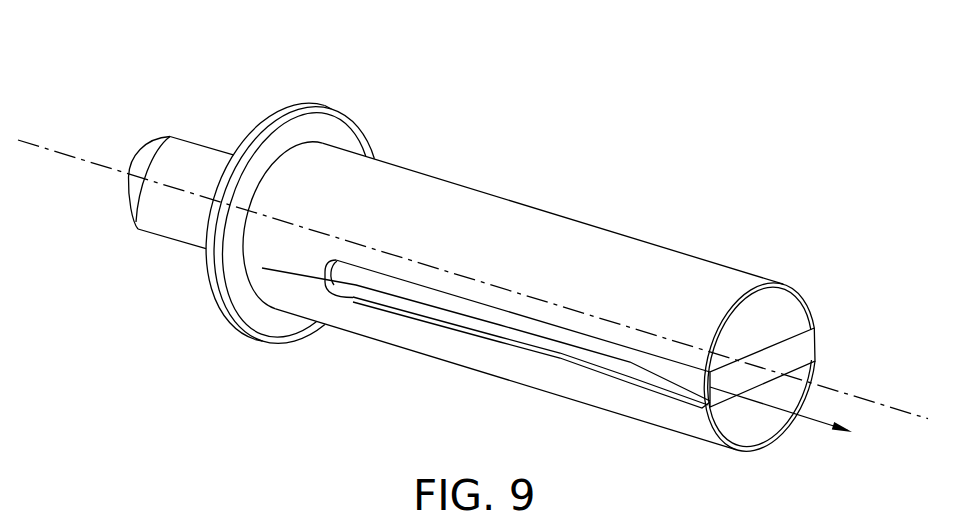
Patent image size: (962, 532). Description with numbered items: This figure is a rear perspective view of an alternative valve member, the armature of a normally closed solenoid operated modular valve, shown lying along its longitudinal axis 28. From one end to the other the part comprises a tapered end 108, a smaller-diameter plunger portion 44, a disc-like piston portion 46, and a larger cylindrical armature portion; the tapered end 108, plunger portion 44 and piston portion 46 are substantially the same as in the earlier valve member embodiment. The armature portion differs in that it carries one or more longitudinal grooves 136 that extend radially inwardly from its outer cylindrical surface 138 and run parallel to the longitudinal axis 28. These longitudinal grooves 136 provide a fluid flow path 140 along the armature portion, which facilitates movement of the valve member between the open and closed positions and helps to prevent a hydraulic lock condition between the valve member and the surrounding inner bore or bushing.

The longitudinal axis 28 is at (42, 146).
The plunger portion 44 is at (200, 143).
The piston portion 46 is at (319, 100).
The tapered end 108 is at (127, 177).
The longitudinal grooves 136 is at (793, 348).
The outer cylindrical surface 138 is at (547, 295).
The fluid flow path 140 is at (460, 313).